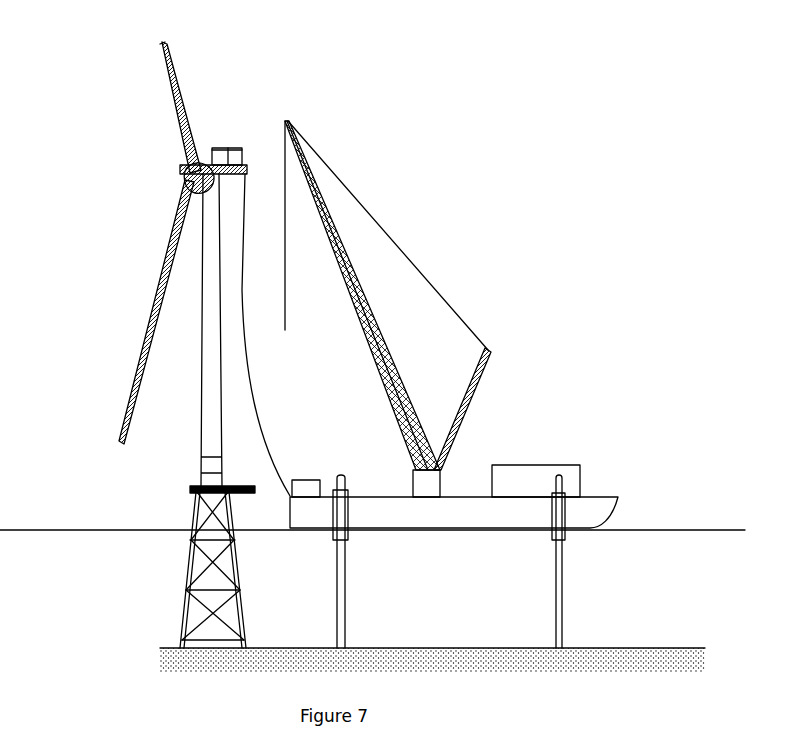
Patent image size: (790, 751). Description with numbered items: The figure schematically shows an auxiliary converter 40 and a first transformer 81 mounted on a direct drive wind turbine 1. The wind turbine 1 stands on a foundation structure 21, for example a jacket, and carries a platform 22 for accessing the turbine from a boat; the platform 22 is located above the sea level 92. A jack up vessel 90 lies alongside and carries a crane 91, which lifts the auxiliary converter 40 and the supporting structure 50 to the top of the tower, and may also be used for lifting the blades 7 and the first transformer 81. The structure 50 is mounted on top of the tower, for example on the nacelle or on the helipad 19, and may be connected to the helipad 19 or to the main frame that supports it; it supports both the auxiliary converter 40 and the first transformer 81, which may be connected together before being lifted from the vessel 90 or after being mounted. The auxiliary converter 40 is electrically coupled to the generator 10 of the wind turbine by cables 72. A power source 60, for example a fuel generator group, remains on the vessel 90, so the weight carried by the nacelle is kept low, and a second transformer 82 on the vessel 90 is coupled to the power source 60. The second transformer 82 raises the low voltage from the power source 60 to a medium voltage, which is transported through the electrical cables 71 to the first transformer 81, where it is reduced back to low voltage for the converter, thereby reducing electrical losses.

The direct drive wind turbine 1 is at (97, 263).
The blades 7 is at (176, 100).
The generator 10 is at (178, 214).
The helipad 19 is at (253, 200).
The foundation structure 21 is at (192, 556).
The platform 22 is at (190, 489).
The auxiliary converter 40 is at (227, 147).
The structure 50 is at (370, 301).
The power source 60 is at (454, 447).
The electrical cables 71 is at (243, 380).
The cables 72 is at (195, 165).
The first transformer 81 is at (238, 148).
The second transformer 82 is at (285, 515).
The jack up vessel 90 is at (586, 510).
The crane 91 is at (314, 478).
The sea level 92 is at (655, 530).